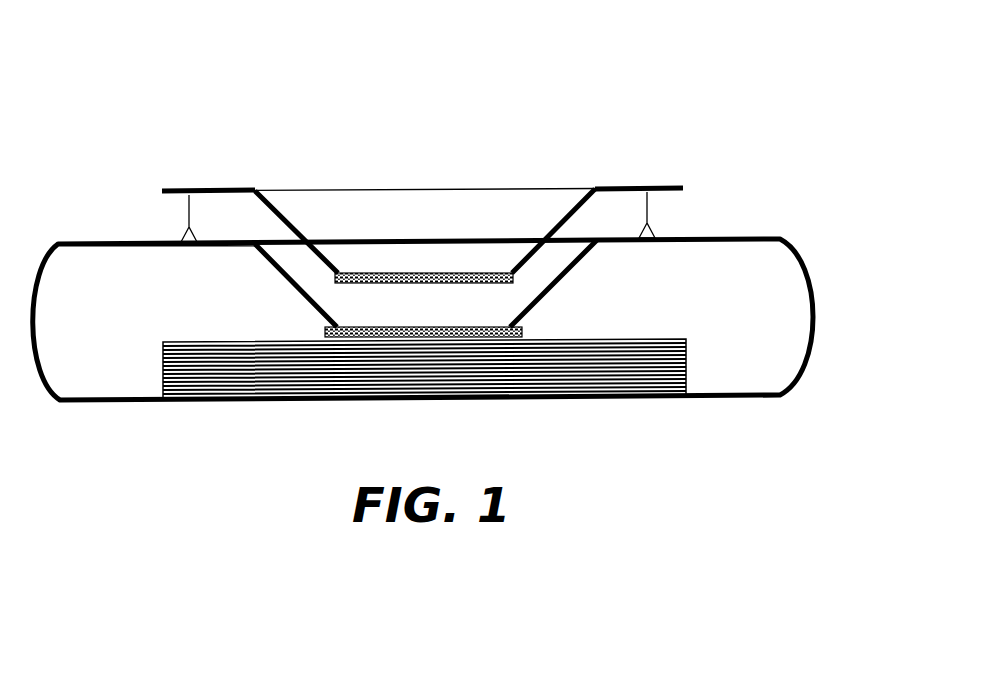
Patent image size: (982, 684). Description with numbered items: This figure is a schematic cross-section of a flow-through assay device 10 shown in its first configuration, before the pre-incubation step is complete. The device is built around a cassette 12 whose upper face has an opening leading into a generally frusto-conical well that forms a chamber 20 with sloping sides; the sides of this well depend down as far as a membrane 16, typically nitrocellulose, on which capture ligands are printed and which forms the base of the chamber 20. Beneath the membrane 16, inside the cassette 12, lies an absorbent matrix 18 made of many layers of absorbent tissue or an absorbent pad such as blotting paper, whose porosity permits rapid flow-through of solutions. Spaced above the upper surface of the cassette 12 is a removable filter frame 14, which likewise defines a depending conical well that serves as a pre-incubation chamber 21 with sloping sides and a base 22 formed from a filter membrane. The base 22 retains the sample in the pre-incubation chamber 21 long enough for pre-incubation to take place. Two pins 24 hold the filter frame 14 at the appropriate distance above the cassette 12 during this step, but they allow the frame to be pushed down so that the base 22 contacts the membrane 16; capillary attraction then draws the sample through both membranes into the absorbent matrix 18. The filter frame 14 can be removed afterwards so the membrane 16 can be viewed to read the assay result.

The flow-through assay device 10 is at (658, 54).
The cassette 12 is at (805, 268).
The filter frame 14 is at (215, 190).
The membrane 16 is at (473, 327).
The absorbent matrix 18 is at (240, 373).
The chamber 20 is at (426, 283).
The pre-incubation chamber 21 is at (425, 231).
The base membrane 22 is at (423, 273).
The pins 24 is at (189, 210).